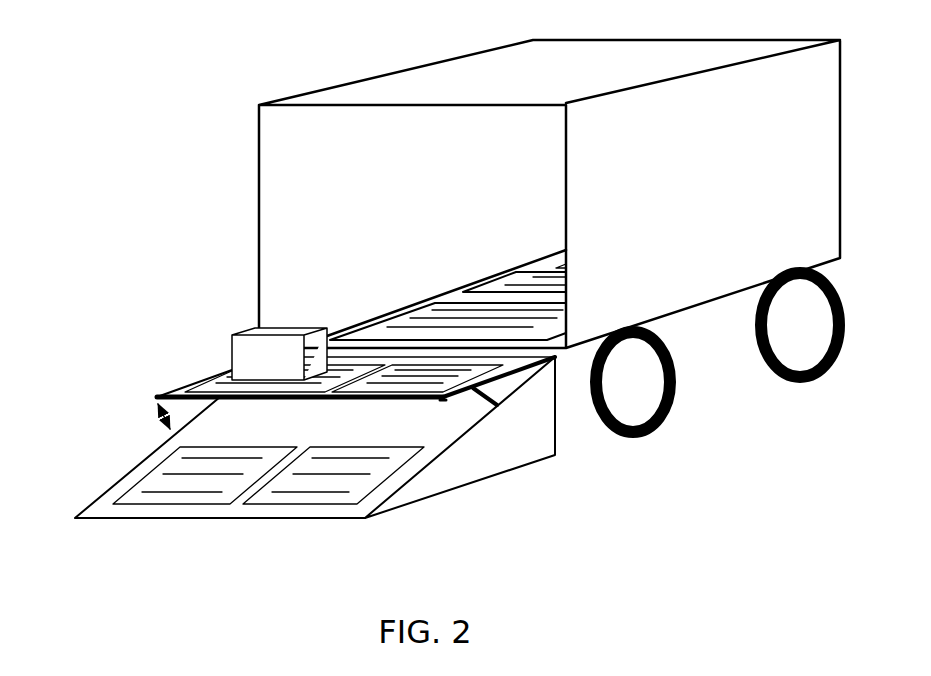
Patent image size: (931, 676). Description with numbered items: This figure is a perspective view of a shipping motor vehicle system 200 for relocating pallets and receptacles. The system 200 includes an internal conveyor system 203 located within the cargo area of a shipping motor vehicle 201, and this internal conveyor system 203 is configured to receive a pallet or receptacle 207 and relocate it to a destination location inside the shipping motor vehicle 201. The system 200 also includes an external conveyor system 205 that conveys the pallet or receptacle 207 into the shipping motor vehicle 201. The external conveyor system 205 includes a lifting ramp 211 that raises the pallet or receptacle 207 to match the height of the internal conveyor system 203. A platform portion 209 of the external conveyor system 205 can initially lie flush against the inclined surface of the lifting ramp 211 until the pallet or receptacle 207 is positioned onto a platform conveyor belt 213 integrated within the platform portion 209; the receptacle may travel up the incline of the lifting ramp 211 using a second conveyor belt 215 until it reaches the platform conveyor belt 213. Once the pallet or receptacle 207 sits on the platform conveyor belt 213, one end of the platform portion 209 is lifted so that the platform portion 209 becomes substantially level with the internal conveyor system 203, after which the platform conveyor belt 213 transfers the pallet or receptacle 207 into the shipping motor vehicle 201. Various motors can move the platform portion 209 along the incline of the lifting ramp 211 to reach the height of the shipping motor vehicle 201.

The shipping motor vehicle system 200 is at (496, 219).
The shipping motor vehicle 201 is at (255, 152).
The internal conveyor system 203 is at (405, 303).
The external conveyor system 205 is at (559, 423).
The pallet or receptacle 207 is at (228, 337).
The platform portion 209 is at (448, 404).
The lifting ramp 211 is at (105, 512).
The platform conveyor belt 213 is at (195, 388).
The second conveyor belt 215 is at (156, 484).